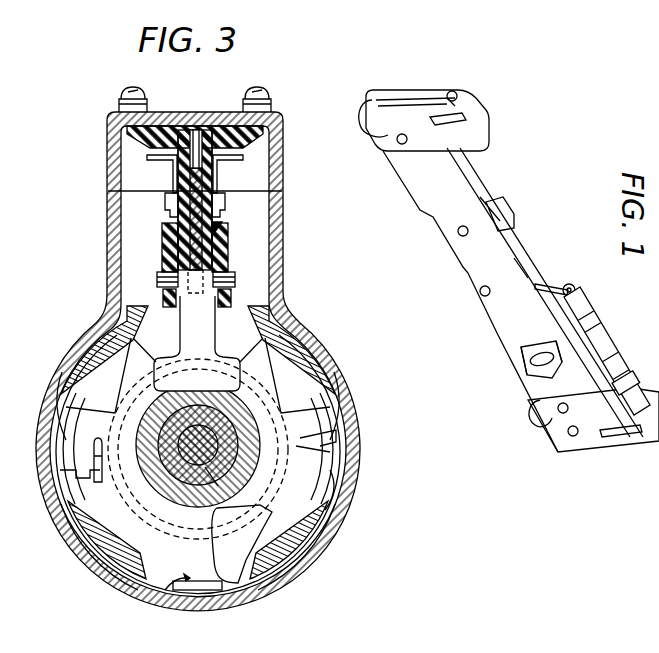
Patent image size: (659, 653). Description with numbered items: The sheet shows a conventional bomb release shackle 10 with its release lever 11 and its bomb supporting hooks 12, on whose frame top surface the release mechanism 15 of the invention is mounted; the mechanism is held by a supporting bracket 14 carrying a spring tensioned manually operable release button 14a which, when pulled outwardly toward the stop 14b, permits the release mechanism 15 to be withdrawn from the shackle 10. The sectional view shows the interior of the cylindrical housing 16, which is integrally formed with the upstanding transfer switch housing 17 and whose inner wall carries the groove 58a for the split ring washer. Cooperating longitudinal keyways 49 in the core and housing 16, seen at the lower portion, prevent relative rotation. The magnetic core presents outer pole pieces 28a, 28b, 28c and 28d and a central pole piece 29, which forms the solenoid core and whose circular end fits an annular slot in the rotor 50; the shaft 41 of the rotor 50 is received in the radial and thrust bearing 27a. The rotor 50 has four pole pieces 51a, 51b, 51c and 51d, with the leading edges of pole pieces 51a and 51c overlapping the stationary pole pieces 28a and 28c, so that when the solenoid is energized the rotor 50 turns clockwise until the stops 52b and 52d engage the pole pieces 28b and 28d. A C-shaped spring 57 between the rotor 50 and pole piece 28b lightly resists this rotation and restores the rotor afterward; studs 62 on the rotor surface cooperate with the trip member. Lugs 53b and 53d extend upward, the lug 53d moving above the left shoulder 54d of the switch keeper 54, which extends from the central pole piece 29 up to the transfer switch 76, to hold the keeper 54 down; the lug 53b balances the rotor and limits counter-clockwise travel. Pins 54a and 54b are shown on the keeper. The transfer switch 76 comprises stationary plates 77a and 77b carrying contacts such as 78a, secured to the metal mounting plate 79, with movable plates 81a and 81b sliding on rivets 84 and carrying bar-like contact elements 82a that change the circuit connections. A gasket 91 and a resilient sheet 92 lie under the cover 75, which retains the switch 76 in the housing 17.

In FIG. 1, the bomb release shackle 10 is at (512, 271).
In FIG. 1, the release lever 11 is at (550, 284).
In FIG. 1, the bomb supporting hooks 12 is at (360, 122).
In FIG. 1, the supporting bracket 14 is at (536, 350).
In FIG. 1, the release button 14a is at (521, 354).
In FIG. 1, the stop 14b is at (522, 368).
In FIG. 1, the release mechanism 15 is at (607, 351).
In FIG. 3, the cylindrical housing 16 is at (331, 349).
In FIG. 3, the transfer switch housing 17 is at (288, 221).
In FIG. 3, the radial and thrust bearing 27a is at (210, 470).
In FIG. 3, the pole piece 28a is at (346, 382).
In FIG. 3, the pole piece 28b is at (341, 490).
In FIG. 3, the pole piece 28c is at (142, 580).
In FIG. 3, the pole piece 28d is at (54, 395).
In FIG. 3, the central pole piece 29 is at (228, 485).
In FIG. 3, the shaft 41 is at (197, 478).
In FIG. 3, the keyways 49 is at (161, 590).
In FIG. 3, the rotor 50 is at (237, 520).
In FIG. 3, the pole piece 51a is at (286, 326).
In FIG. 3, the pole piece 51b is at (308, 455).
In FIG. 3, the pole piece 51c is at (250, 590).
In FIG. 3, the pole piece 51d is at (140, 375).
In FIG. 3, the stop 52b is at (300, 438).
In FIG. 3, the stop 52d is at (68, 477).
In FIG. 3, the lug 53b is at (290, 478).
In FIG. 3, the lug 53d is at (80, 418).
In FIG. 3, the switch keeper 54 is at (110, 312).
In FIG. 3, the lever pin 54a is at (233, 285).
In FIG. 3, the lever pin 54b is at (160, 282).
In FIG. 3, the left shoulder 54d is at (178, 330).
In FIG. 3, the C-shaped spring 57 is at (103, 470).
In FIG. 3, the groove 58a is at (10, 147).
In FIG. 3, the studs 62 is at (140, 442).
In FIG. 3, the cover 75 is at (284, 142).
In FIG. 3, the transfer switch 76 is at (229, 191).
In FIG. 3, the upstanding longitudinal plate 77a is at (213, 141).
In FIG. 3, the upstanding longitudinal plate 77b is at (178, 141).
In FIG. 3, the electrical contact 78a is at (294, 162).
In FIG. 3, the metal mounting plate 79 is at (196, 128).
In FIG. 3, the movable plate 81a is at (229, 262).
In FIG. 3, the movable plate 81b is at (164, 256).
In FIG. 3, the bar-like contact element 82a is at (226, 216).
In FIG. 3, the rivets 84 is at (224, 236).
In FIG. 3, the gasket 91 is at (284, 191).
In FIG. 3, the resilient sheet 92 is at (233, 130).